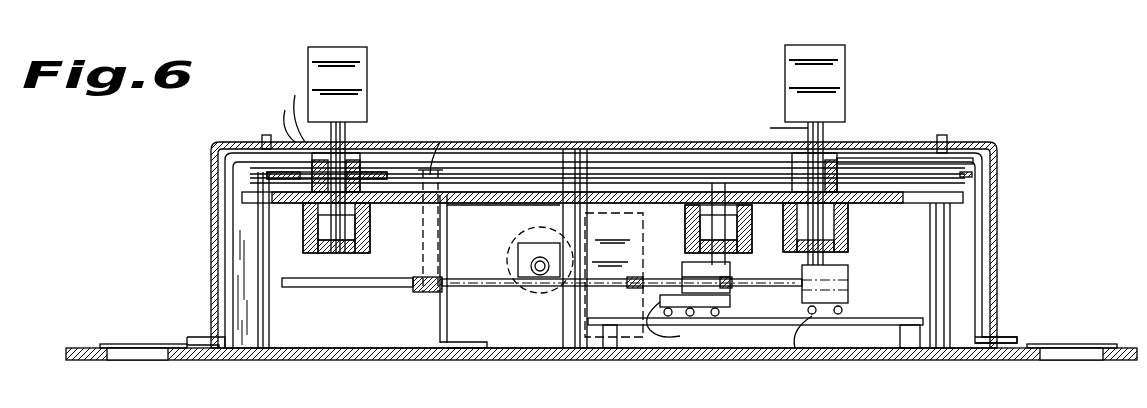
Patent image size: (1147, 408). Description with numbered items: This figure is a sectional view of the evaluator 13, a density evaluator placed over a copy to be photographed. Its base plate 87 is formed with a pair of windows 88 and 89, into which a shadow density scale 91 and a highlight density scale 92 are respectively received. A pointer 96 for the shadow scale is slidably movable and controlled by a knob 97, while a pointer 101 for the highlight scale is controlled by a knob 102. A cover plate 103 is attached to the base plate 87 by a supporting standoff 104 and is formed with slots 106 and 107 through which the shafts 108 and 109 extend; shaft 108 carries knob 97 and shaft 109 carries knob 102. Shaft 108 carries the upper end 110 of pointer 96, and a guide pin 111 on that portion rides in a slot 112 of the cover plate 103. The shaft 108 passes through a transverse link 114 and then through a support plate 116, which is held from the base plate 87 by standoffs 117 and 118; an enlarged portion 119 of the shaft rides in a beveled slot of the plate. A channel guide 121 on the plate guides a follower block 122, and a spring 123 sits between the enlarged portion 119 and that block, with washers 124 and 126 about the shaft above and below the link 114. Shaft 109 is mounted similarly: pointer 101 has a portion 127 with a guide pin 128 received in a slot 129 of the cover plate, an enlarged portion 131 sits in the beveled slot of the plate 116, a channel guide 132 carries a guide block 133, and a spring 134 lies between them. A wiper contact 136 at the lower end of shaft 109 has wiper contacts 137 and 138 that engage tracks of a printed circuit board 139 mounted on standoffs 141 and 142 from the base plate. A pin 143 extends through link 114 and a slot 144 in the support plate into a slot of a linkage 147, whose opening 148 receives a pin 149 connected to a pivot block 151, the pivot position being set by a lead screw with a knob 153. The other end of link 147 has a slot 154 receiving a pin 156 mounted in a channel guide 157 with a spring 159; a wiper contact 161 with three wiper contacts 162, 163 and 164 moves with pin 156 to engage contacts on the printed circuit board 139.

The evaluator 13 is at (1025, 207).
The base plate 87 is at (755, 360).
The window 88 is at (125, 345).
The window 89 is at (1090, 360).
The shadow density scale 91 is at (1100, 344).
The highlight density scale 92 is at (176, 326).
The pointer 96 is at (200, 335).
The knob 97 is at (358, 87).
The pointer 101 is at (1012, 335).
The knob 102 is at (835, 85).
The cover plate 103 is at (650, 142).
The supporting standoff 104 is at (590, 155).
The slot 106 is at (348, 140).
The slot 107 is at (825, 140).
The shaft 108 is at (283, 109).
The shaft 109 is at (772, 125).
The upper end of pointer 110 is at (312, 177).
The guide pin 111 is at (265, 135).
The slot 112 is at (273, 121).
The transverse link 114 is at (500, 168).
The support plate 116 is at (244, 197).
The standoff 117 is at (270, 326).
The standoff 118 is at (962, 256).
The enlarged portion 119 is at (315, 218).
The channel guide 121 is at (365, 256).
The follower block 122 is at (370, 234).
The spring 123 is at (312, 246).
The washer 124 is at (360, 172).
The washer 126 is at (428, 147).
The portion 127 is at (905, 155).
The guide pin 128 is at (950, 142).
The slot 129 is at (950, 142).
The enlarged portion 131 is at (855, 225).
The channel guide 132 is at (848, 250).
The guide block 133 is at (850, 232).
The spring 134 is at (745, 252).
The wiper contact 136 is at (848, 278).
The wiper contact 137 is at (795, 360).
The wiper contact 138 is at (762, 232).
The printed circuit board 139 is at (870, 318).
The standoff 141 is at (610, 350).
The standoff 142 is at (907, 350).
The pin 143 is at (445, 160).
The slot 144 is at (478, 238).
The linkage 147 is at (448, 298).
The opening 148 is at (550, 290).
The pin 149 is at (530, 292).
The pivot block 151 is at (507, 262).
The knob 153 is at (585, 230).
The slot 154 is at (682, 270).
The pin 156 is at (700, 250).
The channel guide 157 is at (686, 227).
The spring 159 is at (718, 200).
The wiper contact 161 is at (733, 292).
The wiper contact 162 is at (660, 300).
The wiper contact 163 is at (690, 316).
The wiper contact 164 is at (735, 335).